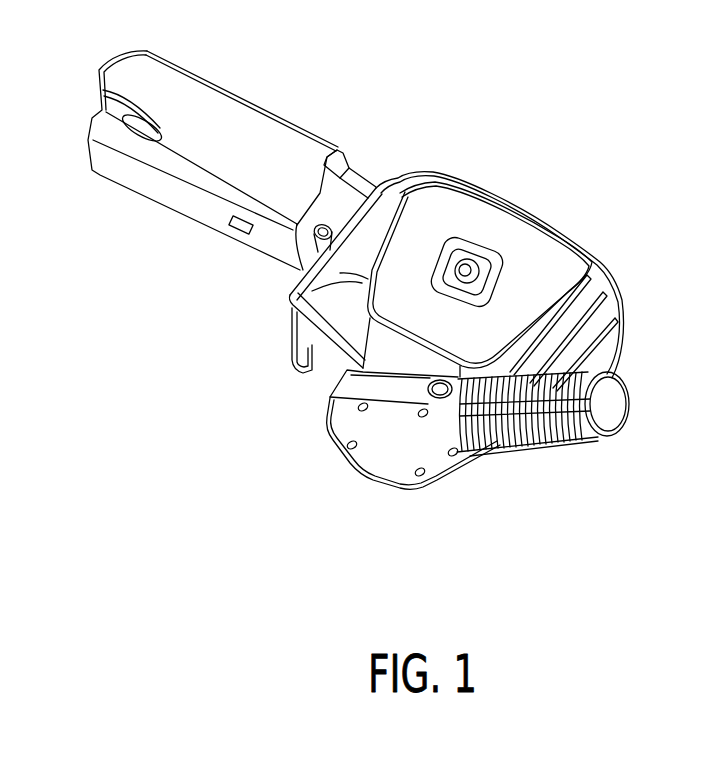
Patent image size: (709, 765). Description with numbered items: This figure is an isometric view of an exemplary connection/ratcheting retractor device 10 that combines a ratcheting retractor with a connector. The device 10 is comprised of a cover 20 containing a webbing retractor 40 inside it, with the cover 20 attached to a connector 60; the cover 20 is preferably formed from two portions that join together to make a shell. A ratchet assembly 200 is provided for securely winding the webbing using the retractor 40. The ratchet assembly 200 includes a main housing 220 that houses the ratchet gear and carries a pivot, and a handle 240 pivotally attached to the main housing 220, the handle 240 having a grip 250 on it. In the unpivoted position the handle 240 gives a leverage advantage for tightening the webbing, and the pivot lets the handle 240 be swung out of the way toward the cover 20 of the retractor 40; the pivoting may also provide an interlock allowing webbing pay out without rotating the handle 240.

The connection/ratcheting retractor device 10 is at (502, 155).
The cover 20 is at (333, 288).
The webbing retractor 40 is at (590, 218).
The connector 60 is at (353, 174).
The ratchet assembly 200 is at (465, 493).
The main housing 220 is at (348, 385).
The handle 240 is at (618, 412).
The grip 250 is at (573, 442).